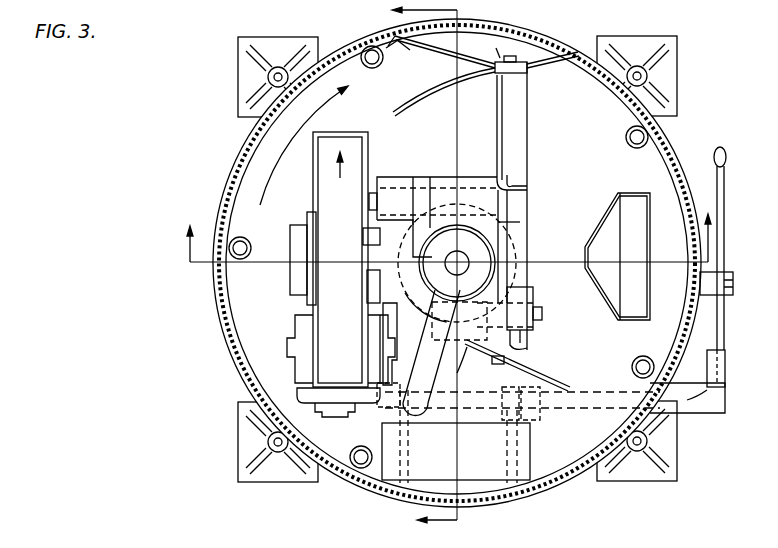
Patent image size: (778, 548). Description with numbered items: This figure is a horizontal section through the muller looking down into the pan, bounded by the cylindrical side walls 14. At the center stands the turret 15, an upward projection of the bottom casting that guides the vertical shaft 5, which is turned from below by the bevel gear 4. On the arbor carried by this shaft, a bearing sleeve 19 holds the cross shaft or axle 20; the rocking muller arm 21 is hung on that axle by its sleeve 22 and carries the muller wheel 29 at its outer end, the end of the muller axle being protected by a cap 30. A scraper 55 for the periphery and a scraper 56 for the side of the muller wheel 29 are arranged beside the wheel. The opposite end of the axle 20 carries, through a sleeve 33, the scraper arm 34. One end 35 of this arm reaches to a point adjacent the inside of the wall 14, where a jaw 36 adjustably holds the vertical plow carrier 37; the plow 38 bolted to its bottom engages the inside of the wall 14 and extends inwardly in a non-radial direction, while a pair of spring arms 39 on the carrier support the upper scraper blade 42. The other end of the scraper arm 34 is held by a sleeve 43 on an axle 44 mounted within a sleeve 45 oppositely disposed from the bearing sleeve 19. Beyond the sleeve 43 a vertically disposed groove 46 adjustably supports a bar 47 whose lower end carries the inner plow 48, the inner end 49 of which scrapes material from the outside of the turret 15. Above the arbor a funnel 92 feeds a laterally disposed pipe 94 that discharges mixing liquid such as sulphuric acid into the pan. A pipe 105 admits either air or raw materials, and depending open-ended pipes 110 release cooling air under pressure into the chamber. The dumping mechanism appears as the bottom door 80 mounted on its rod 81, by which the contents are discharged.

The bevel gear 4 is at (445, 230).
The shaft 5 is at (414, 267).
The cylindrical side walls 14 is at (625, 103).
The turret 15 is at (407, 327).
The bearing sleeve 19 is at (466, 177).
The cross shaft or axle 20 is at (530, 180).
The rocking muller arm 21 is at (383, 237).
The sleeve 22 is at (398, 177).
The muller wheel 29 is at (340, 259).
The cap 30 is at (290, 286).
The sleeve 33 is at (521, 221).
The scraper arm 34 is at (522, 248).
The end of scraper arm 35 is at (528, 69).
The jaw 36 is at (517, 60).
The vertical plow carrier 37 is at (489, 45).
The plow 38 is at (455, 72).
The spring arms 39 is at (445, 52).
The upper scraper blade 42 is at (393, 61).
The sleeve 43 is at (526, 293).
The axle 44 is at (528, 333).
The sleeve 45 is at (470, 361).
The vertically disposed groove 46 is at (528, 344).
The bar 47 is at (497, 371).
The inner plow 48 is at (553, 377).
The inner end of inner plow 49 is at (440, 326).
The scraper 55 is at (334, 412).
The scraper 56 is at (293, 333).
The bottom door 80 is at (531, 447).
The rod 81 is at (563, 408).
The funnel 92 is at (478, 251).
The laterally disposed pipe 94 is at (425, 415).
The pipe 105 is at (637, 203).
The depending open-ended pipes 110 is at (362, 64).